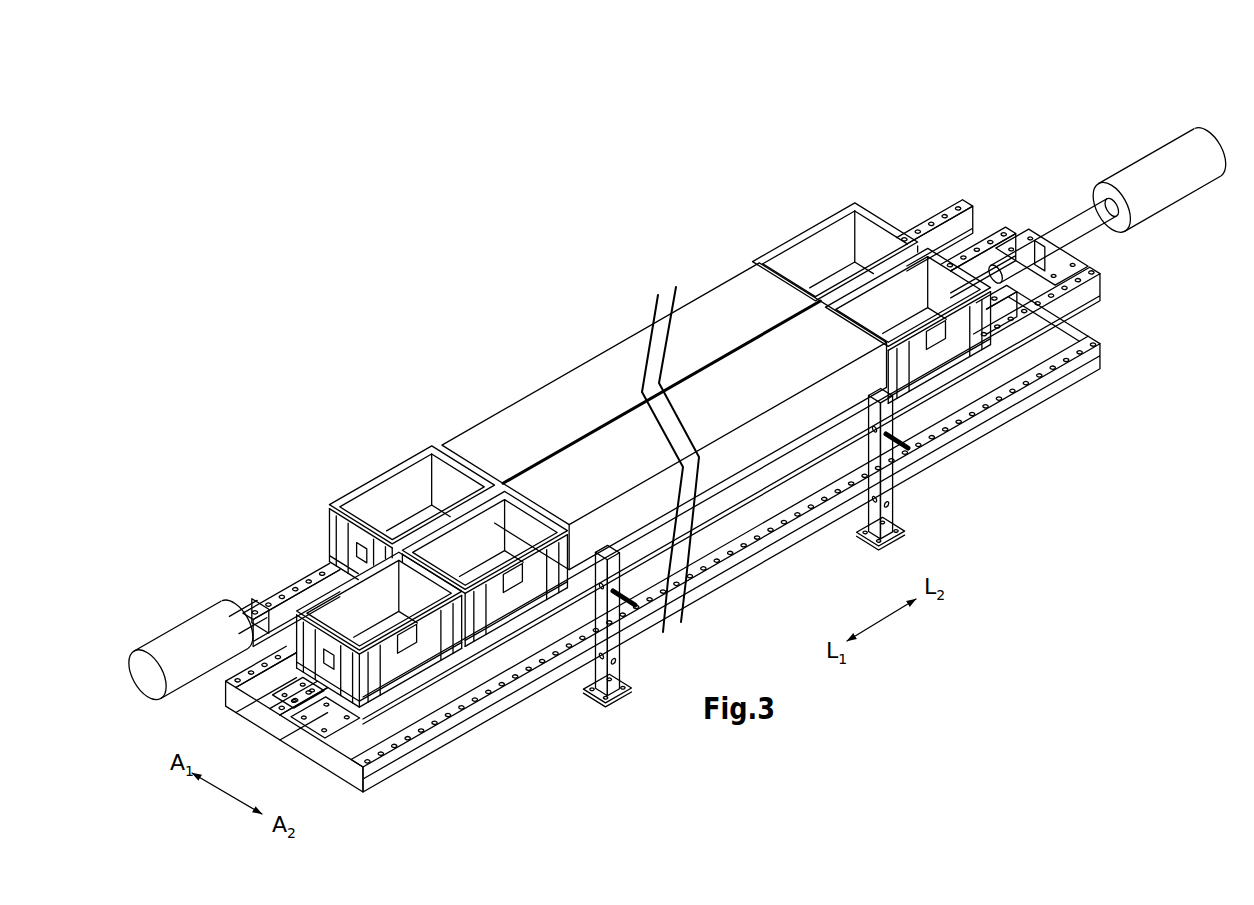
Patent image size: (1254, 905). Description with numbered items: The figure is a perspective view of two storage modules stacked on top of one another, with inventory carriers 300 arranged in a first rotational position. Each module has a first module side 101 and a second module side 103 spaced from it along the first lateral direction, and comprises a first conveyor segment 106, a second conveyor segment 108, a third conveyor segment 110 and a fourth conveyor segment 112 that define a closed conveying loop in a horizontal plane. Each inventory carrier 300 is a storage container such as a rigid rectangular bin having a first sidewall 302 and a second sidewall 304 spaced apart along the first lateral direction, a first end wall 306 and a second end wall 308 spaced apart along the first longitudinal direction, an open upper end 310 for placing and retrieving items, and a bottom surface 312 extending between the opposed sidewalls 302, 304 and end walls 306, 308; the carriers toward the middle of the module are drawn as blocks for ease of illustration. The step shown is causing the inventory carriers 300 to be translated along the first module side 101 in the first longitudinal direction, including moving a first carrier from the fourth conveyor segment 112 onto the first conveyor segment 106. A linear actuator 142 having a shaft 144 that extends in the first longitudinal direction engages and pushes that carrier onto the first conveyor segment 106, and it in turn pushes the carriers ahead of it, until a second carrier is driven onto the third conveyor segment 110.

The first module side 101 is at (1118, 244).
The second module side 103 is at (1030, 150).
The first conveyor segment 106 is at (745, 497).
The second conveyor segment 108 is at (327, 536).
The third conveyor segment 110 is at (246, 654).
The fourth conveyor segment 112 is at (1032, 210).
The actuator 142 is at (1160, 160).
The shaft 144 is at (1070, 228).
The inventory carrier 300 is at (738, 173).
The first sidewall 302 is at (880, 220).
The second sidewall 304 is at (806, 252).
The first end wall 306 is at (884, 222).
The second end wall 308 is at (777, 268).
The upper end 310 is at (779, 262).
The bottom surface 312 is at (843, 280).